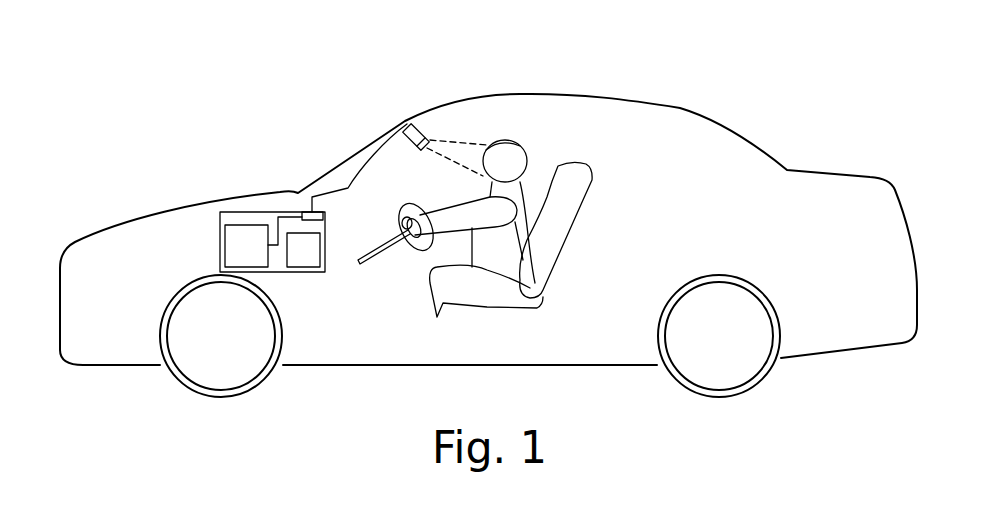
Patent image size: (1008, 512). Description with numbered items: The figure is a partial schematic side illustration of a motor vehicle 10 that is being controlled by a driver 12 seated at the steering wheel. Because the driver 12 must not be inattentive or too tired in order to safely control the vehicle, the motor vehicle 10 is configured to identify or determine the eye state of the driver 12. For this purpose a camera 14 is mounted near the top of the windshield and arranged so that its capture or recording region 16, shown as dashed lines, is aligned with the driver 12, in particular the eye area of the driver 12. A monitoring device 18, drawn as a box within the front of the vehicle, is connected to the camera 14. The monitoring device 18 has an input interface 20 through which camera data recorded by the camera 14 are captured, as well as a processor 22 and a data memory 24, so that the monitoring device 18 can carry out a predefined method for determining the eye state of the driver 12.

The motor vehicle 10 is at (580, 98).
The driver 12 is at (532, 190).
The camera 14 is at (404, 143).
The recording region 16 is at (448, 160).
The monitoring device 18 is at (220, 220).
The input interface 20 is at (328, 213).
The processor 22 is at (303, 270).
The data memory 24 is at (220, 247).